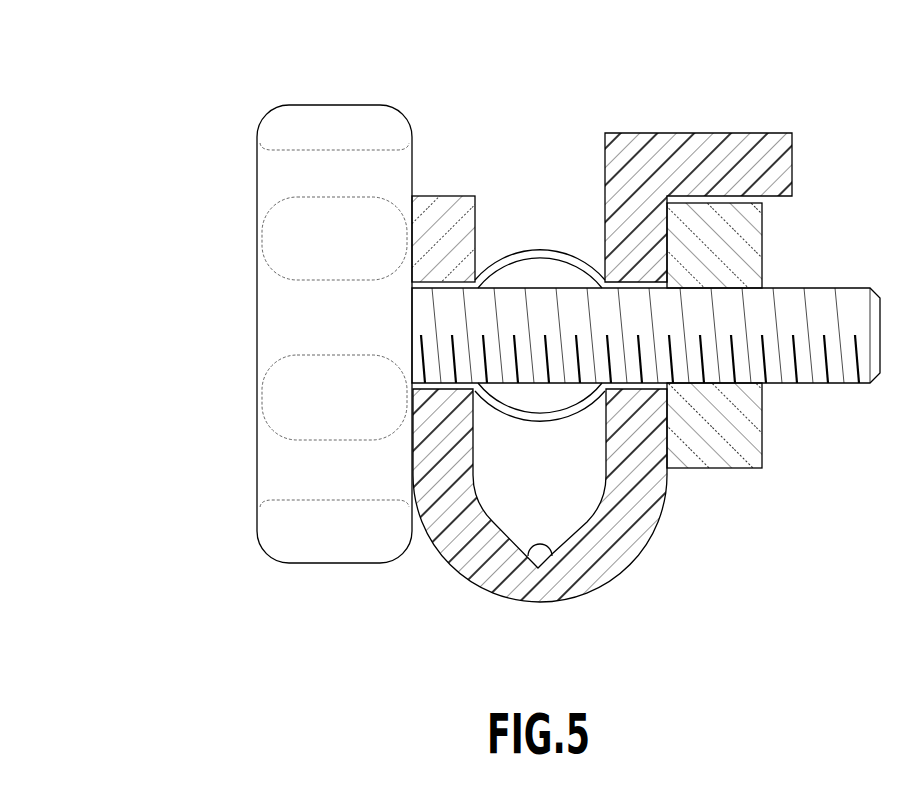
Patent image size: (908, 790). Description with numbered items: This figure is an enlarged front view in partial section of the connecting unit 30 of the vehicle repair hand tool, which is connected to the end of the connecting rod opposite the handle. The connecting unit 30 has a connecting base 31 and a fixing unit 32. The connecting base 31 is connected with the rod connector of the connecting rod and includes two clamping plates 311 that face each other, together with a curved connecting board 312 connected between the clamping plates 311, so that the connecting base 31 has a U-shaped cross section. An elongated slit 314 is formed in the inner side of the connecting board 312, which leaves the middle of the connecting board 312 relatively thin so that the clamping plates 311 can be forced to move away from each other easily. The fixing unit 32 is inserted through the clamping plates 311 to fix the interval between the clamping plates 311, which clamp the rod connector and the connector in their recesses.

The connecting unit 30 is at (203, 82).
The connecting base 31 is at (734, 126).
The clamping plates 311 is at (443, 218).
The connecting board 312 is at (632, 535).
The slit 314 is at (543, 548).
The fixing unit 32 is at (268, 465).